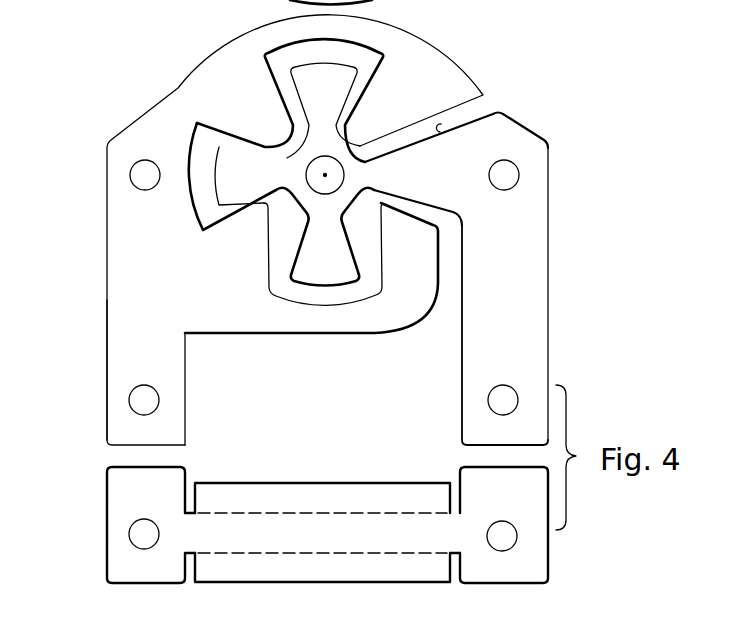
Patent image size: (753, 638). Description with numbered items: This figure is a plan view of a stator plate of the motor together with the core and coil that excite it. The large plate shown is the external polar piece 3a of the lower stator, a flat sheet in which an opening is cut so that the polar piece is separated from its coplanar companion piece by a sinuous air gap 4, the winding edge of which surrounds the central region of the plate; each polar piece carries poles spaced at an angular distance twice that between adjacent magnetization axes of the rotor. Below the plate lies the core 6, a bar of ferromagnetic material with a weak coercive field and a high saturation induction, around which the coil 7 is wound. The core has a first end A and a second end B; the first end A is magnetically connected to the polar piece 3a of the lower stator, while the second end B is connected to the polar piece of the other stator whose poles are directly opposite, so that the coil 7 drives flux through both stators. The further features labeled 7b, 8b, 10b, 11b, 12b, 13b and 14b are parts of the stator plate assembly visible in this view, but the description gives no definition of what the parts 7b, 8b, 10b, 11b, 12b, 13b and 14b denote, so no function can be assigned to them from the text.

The external polar piece of the lower stator 3a is at (132, 148).
The sinuous air gap 4 is at (372, 2).
The core 6 is at (167, 483).
The coil 7 is at (387, 498).
The pole piece 7b is at (258, 116).
The pole piece edge 8b is at (307, 85).
The slot 10b is at (353, 30).
The central bore 11b is at (300, 190).
The left arm 12b is at (148, 332).
The right arm 13b is at (515, 290).
The slit 14b is at (441, 124).
The first end of the core A is at (118, 528).
The second end of the core B is at (523, 565).